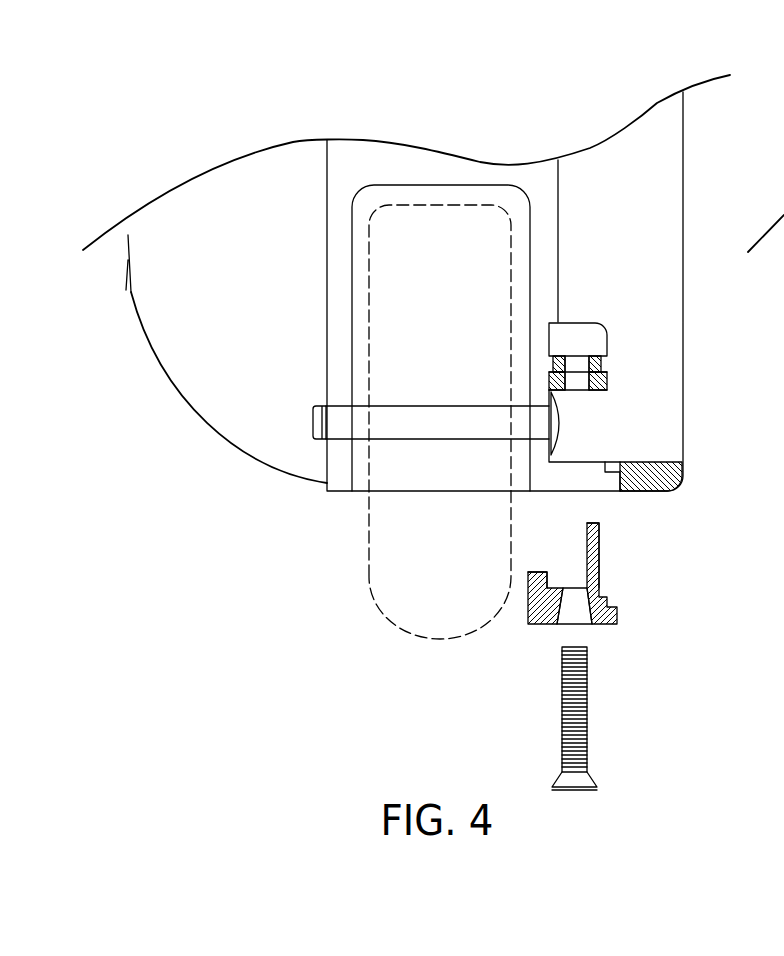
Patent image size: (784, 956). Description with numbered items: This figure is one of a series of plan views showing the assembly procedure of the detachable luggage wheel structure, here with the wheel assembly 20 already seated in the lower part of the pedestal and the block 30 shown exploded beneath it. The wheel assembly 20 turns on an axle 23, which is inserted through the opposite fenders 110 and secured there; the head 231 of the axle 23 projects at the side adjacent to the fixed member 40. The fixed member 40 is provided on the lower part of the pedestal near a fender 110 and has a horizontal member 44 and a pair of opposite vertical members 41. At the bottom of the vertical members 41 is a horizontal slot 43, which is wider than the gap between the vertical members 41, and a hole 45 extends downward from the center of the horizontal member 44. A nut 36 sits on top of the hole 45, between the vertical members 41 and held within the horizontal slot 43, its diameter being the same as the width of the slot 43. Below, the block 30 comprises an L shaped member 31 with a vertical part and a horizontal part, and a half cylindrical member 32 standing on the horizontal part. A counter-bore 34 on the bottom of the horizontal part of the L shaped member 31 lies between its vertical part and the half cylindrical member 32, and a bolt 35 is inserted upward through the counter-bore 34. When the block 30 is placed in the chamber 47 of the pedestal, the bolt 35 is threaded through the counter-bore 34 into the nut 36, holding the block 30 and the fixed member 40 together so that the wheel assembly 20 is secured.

The fender 110 is at (540, 243).
The wheel assembly 20 is at (393, 622).
The axle 23 is at (400, 428).
The head 231 is at (677, 490).
The fixed member 40 is at (652, 391).
The vertical member 41 is at (582, 337).
The horizontal slot 43 is at (603, 358).
The nut 36 is at (600, 366).
The horizontal member 44 is at (583, 392).
The hole 45 is at (562, 440).
The chamber 47 is at (575, 477).
The block 30 is at (586, 610).
The L shaped member 31 is at (527, 613).
The half cylindrical member 32 is at (600, 533).
The counter-bore 34 is at (582, 618).
The bolt 35 is at (580, 722).